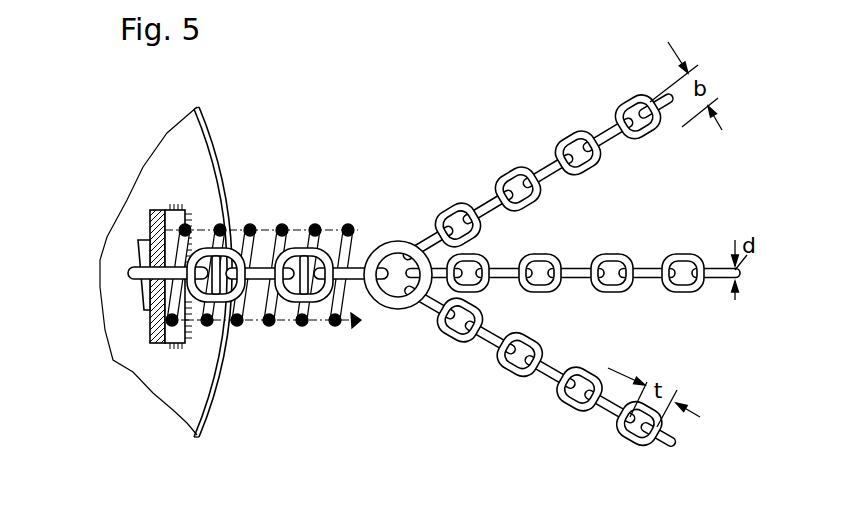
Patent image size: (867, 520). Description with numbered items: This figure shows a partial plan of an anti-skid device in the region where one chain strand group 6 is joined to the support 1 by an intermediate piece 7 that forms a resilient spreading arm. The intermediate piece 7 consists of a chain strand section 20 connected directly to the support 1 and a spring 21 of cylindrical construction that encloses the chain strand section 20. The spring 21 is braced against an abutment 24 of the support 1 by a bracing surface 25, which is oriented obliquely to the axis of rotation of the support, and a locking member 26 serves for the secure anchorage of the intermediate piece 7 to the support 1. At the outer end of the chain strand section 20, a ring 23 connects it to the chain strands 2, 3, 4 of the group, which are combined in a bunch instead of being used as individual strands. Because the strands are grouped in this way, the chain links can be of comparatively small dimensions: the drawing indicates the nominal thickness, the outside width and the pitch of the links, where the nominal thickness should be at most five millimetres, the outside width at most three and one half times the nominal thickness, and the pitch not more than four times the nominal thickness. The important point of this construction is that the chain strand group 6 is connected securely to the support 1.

The support 1 is at (215, 127).
The chain strand 2 is at (512, 170).
The chain strand 3 is at (618, 255).
The chain strand 4 is at (573, 407).
The chain strand group 6 is at (463, 392).
The intermediate piece 7 is at (298, 327).
The chain strand section 20 is at (327, 242).
The spring 21 is at (288, 227).
The ring 23 is at (398, 305).
The abutment 24 is at (160, 320).
The bracing surface 25 is at (165, 223).
The locking member 26 is at (145, 250).